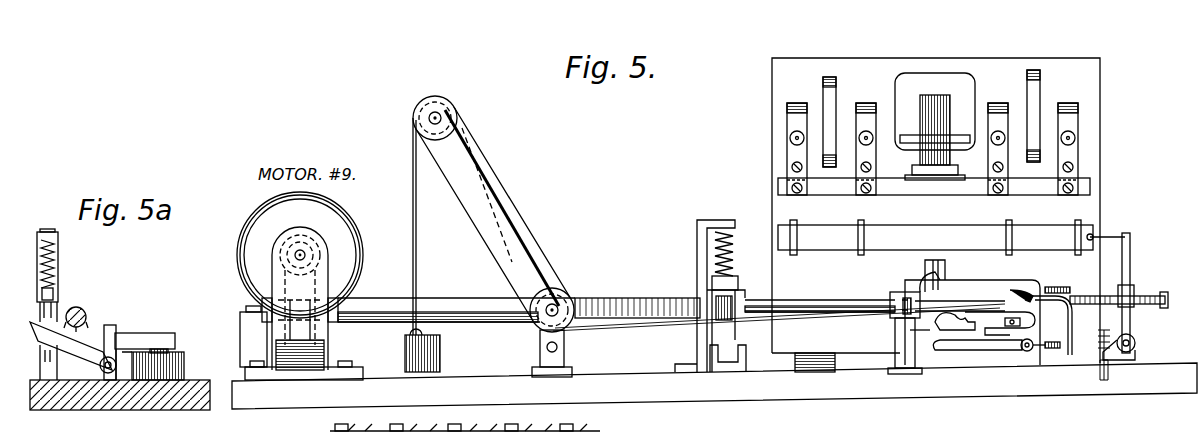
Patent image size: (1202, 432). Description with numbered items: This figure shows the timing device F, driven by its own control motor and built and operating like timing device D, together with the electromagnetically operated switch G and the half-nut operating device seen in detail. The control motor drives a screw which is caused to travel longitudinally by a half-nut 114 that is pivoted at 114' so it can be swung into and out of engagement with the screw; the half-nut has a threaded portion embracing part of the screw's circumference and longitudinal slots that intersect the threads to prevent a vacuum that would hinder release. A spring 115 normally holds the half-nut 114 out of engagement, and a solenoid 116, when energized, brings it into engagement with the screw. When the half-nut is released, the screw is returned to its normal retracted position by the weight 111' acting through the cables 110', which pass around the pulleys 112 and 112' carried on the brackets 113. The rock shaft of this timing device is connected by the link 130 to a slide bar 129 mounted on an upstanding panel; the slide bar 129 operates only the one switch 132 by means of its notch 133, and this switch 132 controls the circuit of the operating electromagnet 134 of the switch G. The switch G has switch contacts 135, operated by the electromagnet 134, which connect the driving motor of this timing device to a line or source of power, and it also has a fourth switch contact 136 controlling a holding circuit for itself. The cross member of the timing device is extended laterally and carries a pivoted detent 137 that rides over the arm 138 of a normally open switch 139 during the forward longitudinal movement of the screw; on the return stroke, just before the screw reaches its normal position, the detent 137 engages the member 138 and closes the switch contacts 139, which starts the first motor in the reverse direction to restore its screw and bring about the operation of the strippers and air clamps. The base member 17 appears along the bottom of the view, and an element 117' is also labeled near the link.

In FIG. 5A, the spring 115 is at (58, 279).
In FIG. 5A, the half-nut 114 is at (80, 333).
In FIG. 5A, the half-nut pivot 114' is at (137, 340).
In FIG. 5A, the solenoid 116 is at (175, 362).
In FIG. 5, the bar 17 is at (520, 431).
In FIG. 5, the pulley 112' is at (461, 115).
In FIG. 5, the cables 110' is at (442, 226).
In FIG. 5, the weight 111' is at (445, 350).
In FIG. 5, the brackets 113 is at (522, 221).
In FIG. 5, the pulley 112 is at (564, 314).
In FIG. 5, the electromagnetically operated switch G is at (936, 201).
In FIG. 5, the switch contacts 135 is at (866, 103).
In FIG. 5, the fourth switch contact 136 is at (1078, 113).
In FIG. 5, the operating electromagnet 134 is at (940, 110).
In FIG. 5, the slide bar 129 is at (960, 236).
In FIG. 5, the notch 133 is at (938, 258).
In FIG. 5, the switch 132 is at (945, 264).
In FIG. 5, the link 130 is at (1106, 236).
In FIG. 5, the threaded rod 117' is at (1125, 279).
In FIG. 5, the arm 138 is at (938, 318).
In FIG. 5, the normally open switch 139 is at (965, 352).
In FIG. 5, the pivoted detent 137 is at (888, 326).